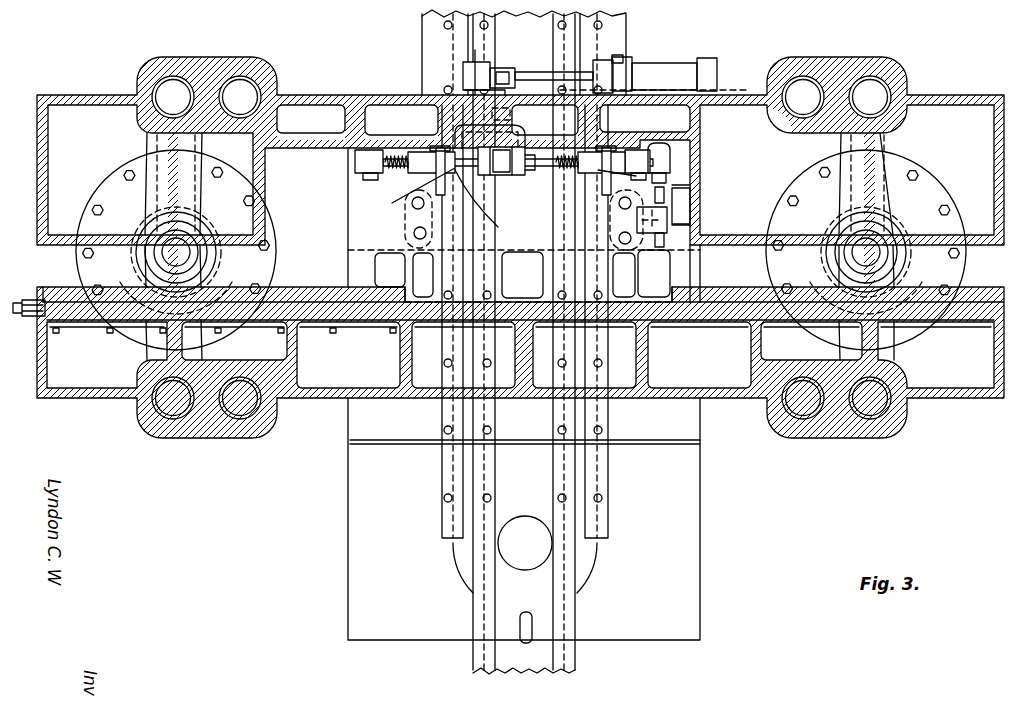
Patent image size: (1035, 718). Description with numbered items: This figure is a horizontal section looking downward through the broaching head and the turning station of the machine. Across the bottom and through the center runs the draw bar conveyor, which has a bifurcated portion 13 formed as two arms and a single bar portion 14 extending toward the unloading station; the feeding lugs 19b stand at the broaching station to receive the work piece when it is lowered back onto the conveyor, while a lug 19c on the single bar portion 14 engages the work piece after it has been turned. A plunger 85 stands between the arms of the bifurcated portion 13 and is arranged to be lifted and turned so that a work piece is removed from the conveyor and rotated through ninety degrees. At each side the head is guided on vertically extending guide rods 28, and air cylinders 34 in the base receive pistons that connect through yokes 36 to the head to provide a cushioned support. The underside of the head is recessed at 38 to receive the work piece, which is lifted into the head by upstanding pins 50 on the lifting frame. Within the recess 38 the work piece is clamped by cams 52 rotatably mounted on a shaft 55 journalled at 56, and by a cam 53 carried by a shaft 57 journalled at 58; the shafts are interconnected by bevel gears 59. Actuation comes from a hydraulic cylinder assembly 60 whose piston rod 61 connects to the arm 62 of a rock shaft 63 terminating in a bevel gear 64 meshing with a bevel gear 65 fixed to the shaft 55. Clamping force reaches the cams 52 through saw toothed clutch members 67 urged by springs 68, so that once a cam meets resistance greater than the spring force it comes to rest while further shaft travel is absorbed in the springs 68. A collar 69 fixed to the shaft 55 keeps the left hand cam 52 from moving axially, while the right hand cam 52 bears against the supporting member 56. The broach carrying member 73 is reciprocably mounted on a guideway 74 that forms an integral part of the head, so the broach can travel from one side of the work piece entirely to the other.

The bifurcated portion 13 is at (578, 20).
The single bar portion 14 is at (532, 665).
The feeding lugs 19b is at (572, 225).
The lug 19c is at (535, 623).
The guide rods 28 is at (807, 420).
The air cylinders 34 is at (950, 262).
The yokes 36 is at (885, 193).
The recess 38 is at (290, 160).
The upstanding pins 50 is at (628, 246).
The cams 52 is at (510, 192).
The cam 53 is at (653, 237).
The shaft 55 is at (502, 165).
The journal 56 is at (640, 150).
The shaft 57 is at (700, 197).
The journal 58 is at (702, 234).
The bevel gears 59 is at (672, 162).
The hydraulic cylinder assembly 60 is at (667, 73).
The piston rod 61 is at (535, 72).
The arm 62 is at (475, 70).
The rock shaft 63 is at (510, 113).
The bevel gear 64 is at (460, 138).
The bevel gear 65 is at (520, 168).
The clutch members 67 is at (412, 174).
The springs 68 is at (372, 186).
The collar 69 is at (489, 205).
The member 73 is at (232, 300).
The guideway 74 is at (312, 296).
The plunger 85 is at (530, 543).